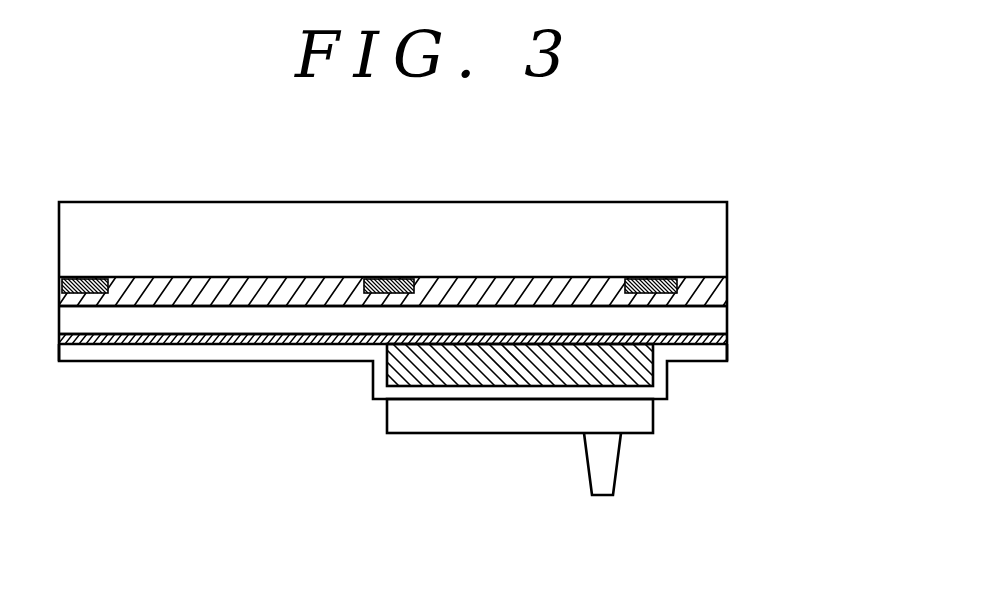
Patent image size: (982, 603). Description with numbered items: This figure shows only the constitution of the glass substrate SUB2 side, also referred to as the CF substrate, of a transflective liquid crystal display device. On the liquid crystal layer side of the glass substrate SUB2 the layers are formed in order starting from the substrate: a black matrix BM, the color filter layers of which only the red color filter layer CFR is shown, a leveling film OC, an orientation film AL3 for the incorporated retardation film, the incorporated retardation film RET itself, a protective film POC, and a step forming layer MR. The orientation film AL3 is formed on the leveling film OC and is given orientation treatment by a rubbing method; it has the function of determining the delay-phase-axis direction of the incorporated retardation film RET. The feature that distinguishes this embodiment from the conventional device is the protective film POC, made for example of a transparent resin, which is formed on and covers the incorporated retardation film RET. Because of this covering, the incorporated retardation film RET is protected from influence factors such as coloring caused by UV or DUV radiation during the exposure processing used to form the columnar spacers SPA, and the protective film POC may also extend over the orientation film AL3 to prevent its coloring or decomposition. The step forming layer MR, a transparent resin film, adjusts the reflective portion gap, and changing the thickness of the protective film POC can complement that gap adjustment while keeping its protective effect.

The glass substrate SUB2 is at (708, 208).
The black matrix BM is at (667, 276).
The red color filter layer CFR is at (718, 290).
The leveling film OC is at (715, 320).
The orientation film AL3 is at (728, 340).
The protective film POC is at (697, 355).
The incorporated retardation film RET is at (643, 372).
The step forming layer MR is at (632, 420).
The columnar spacers SPA is at (612, 474).